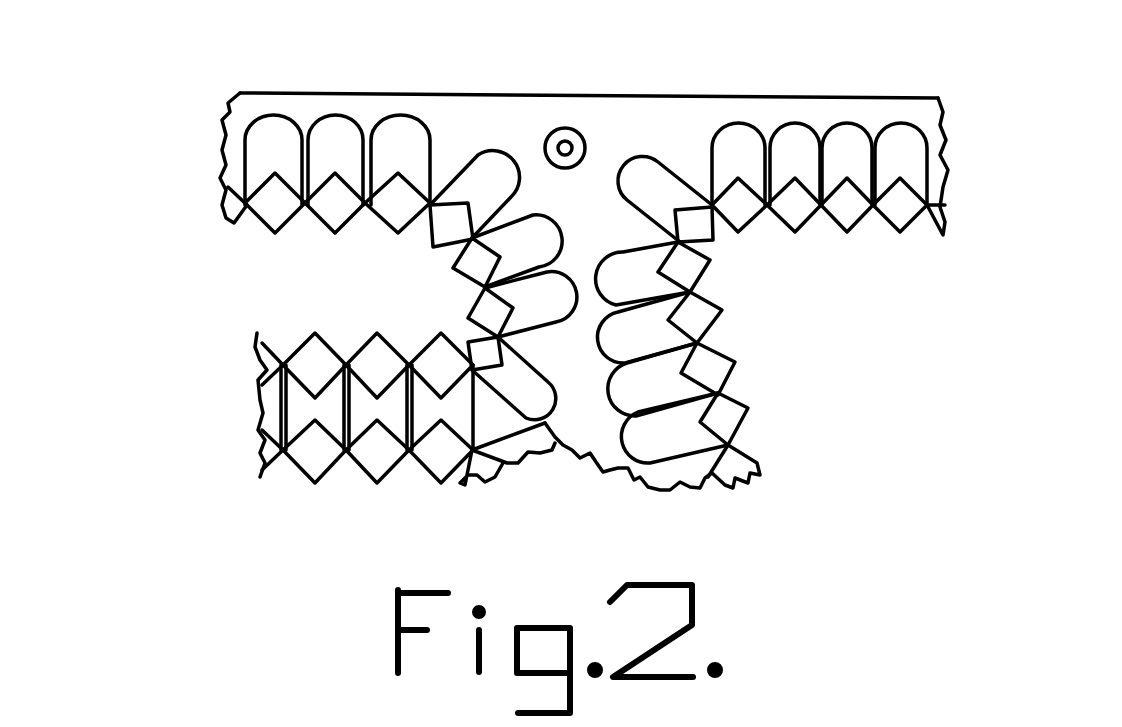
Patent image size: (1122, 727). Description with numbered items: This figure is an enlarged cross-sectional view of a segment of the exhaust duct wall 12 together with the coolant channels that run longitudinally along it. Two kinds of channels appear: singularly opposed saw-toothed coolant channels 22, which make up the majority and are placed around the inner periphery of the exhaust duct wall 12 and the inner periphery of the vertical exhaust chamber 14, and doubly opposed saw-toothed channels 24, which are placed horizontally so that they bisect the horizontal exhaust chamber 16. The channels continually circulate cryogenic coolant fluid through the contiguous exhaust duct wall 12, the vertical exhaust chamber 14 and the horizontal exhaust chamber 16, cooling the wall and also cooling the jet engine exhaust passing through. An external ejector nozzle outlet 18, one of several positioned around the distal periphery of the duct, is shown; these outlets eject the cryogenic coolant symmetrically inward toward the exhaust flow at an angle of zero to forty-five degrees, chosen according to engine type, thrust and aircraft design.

The exhaust duct wall 12 is at (665, 130).
The vertical exhaust chamber 14 is at (827, 317).
The horizontal exhaust chamber 16 is at (357, 282).
The external ejector nozzle outlet 18 is at (573, 128).
The singularly opposed saw-toothed coolant channel 22 is at (937, 115).
The doubly opposed saw-toothed coolant channel 24 is at (283, 405).